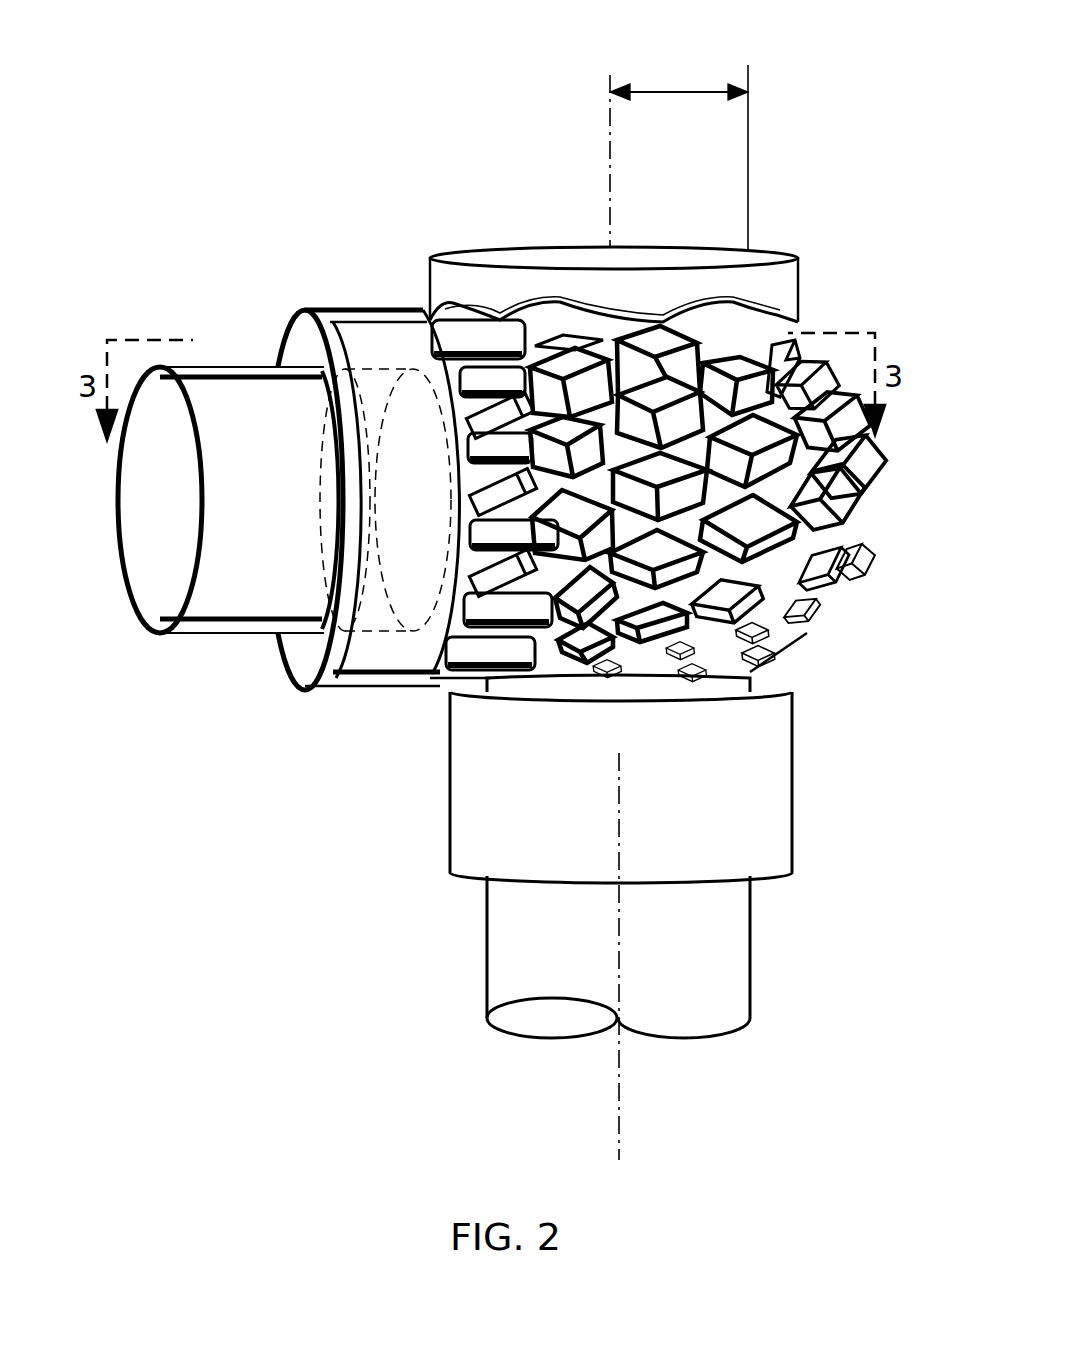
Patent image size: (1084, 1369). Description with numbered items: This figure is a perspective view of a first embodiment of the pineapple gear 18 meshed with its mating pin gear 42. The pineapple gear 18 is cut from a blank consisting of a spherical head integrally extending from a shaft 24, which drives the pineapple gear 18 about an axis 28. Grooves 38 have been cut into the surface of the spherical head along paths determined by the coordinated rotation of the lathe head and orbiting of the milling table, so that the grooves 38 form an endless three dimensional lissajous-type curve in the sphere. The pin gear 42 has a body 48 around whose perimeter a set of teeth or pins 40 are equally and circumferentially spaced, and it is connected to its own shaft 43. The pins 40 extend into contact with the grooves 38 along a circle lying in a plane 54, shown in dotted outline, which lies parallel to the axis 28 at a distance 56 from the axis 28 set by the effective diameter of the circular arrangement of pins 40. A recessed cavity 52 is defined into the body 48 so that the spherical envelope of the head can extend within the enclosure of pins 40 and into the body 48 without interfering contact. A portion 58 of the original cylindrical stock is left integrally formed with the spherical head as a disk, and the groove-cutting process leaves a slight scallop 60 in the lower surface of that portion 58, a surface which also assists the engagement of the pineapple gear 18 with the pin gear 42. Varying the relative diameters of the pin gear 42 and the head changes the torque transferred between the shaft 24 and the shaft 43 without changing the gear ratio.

The pineapple gear 18 is at (669, 443).
The shaft 24 is at (487, 920).
The axis 28 is at (610, 190).
The groove 38 is at (838, 575).
The tooth 40 is at (447, 672).
The pin gear 42 is at (288, 530).
The shaft 43 is at (245, 635).
The body 48 is at (335, 688).
The cavity 52 is at (387, 365).
The plane 54 is at (748, 155).
The distance 56 is at (683, 90).
The portion 58 is at (715, 247).
The scallop 60 is at (780, 305).